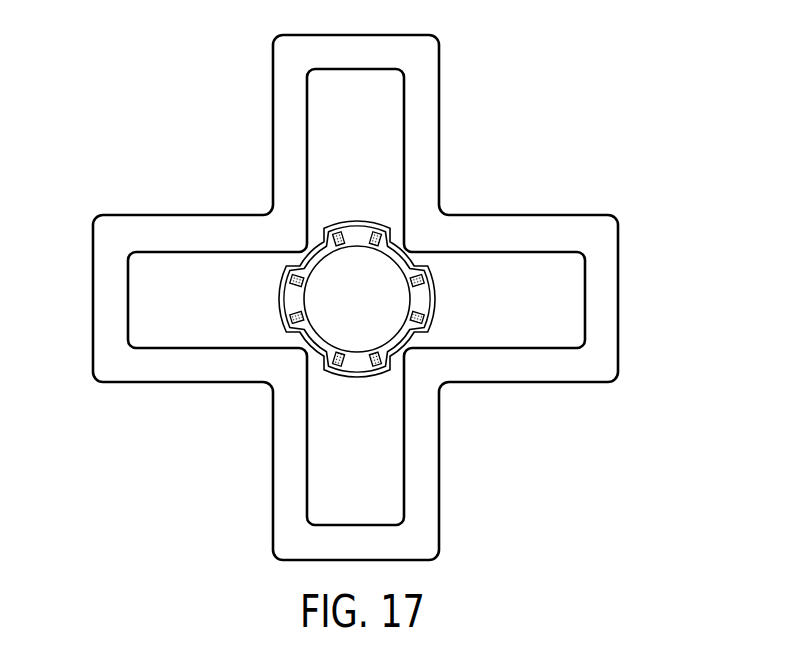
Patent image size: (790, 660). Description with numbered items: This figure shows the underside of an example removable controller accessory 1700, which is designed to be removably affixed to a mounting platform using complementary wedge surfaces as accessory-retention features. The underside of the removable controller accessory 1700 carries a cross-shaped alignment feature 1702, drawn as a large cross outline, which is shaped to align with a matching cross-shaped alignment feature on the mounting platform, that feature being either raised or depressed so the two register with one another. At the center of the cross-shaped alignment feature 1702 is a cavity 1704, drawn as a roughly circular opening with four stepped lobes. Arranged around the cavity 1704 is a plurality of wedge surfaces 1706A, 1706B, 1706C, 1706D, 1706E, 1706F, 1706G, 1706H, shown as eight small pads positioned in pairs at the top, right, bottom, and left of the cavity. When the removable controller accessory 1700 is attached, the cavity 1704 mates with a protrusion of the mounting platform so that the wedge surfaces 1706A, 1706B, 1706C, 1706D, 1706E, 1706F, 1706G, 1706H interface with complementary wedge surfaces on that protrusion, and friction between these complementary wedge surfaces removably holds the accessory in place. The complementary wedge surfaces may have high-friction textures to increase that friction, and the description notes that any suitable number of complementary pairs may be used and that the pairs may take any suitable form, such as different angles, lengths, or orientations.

The removable controller accessory 1700 is at (155, 65).
The cross-shaped alignment feature 1702 is at (207, 252).
The cavity 1704 is at (375, 310).
The wedge surface 1706A is at (376, 236).
The wedge surface 1706B is at (421, 282).
The wedge surface 1706C is at (424, 316).
The wedge surface 1706D is at (375, 364).
The wedge surface 1706E is at (338, 364).
The wedge surface 1706F is at (292, 326).
The wedge surface 1706G is at (292, 281).
The wedge surface 1706H is at (336, 234).